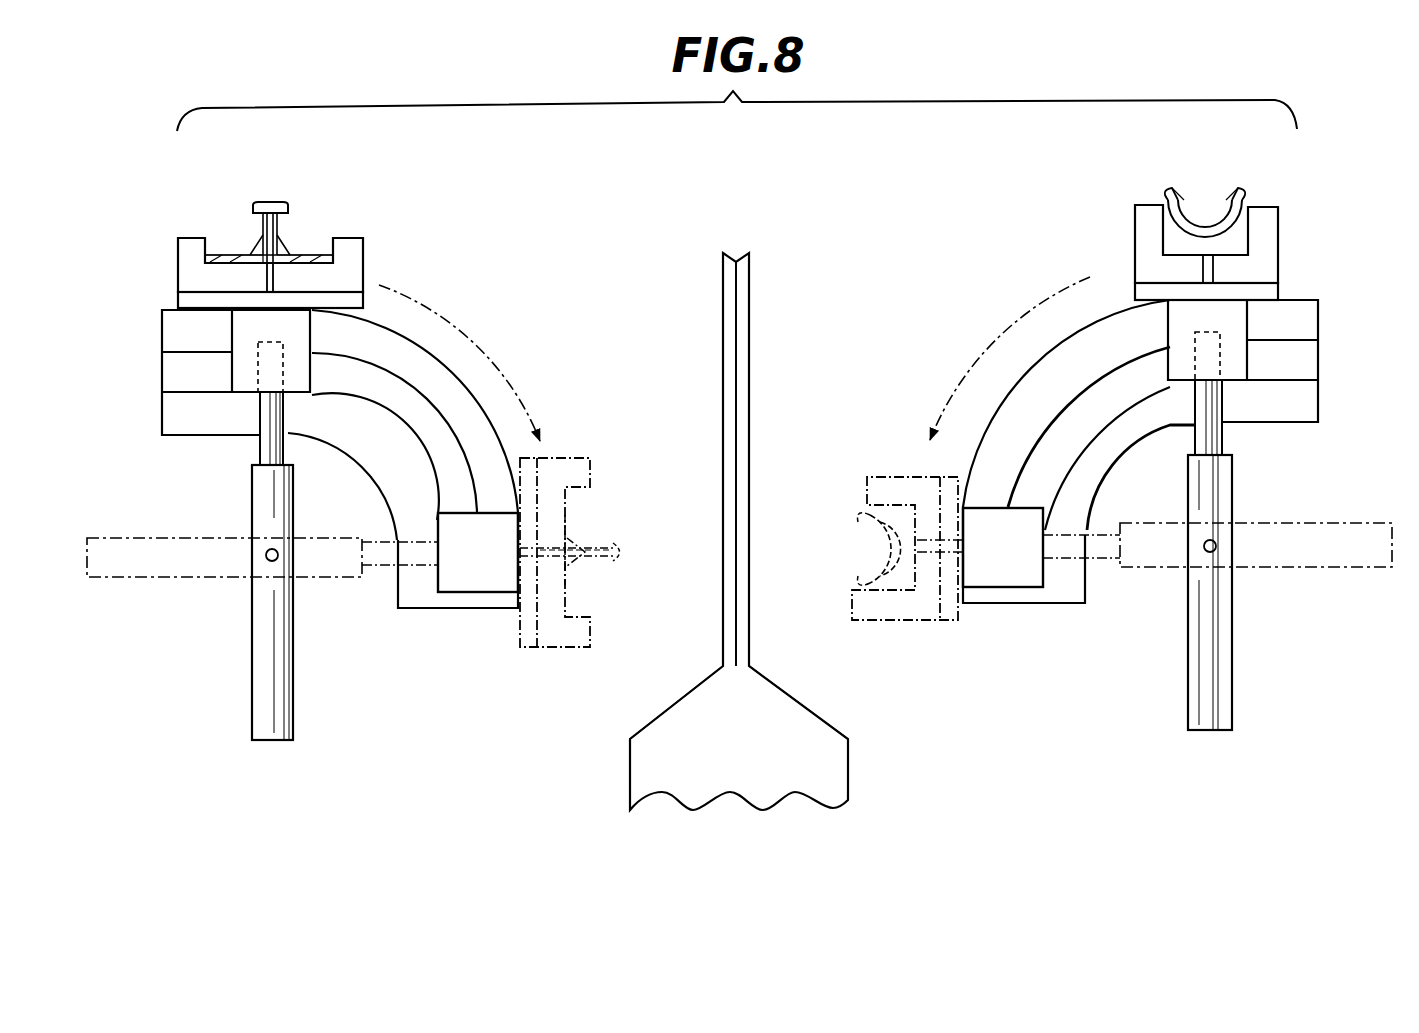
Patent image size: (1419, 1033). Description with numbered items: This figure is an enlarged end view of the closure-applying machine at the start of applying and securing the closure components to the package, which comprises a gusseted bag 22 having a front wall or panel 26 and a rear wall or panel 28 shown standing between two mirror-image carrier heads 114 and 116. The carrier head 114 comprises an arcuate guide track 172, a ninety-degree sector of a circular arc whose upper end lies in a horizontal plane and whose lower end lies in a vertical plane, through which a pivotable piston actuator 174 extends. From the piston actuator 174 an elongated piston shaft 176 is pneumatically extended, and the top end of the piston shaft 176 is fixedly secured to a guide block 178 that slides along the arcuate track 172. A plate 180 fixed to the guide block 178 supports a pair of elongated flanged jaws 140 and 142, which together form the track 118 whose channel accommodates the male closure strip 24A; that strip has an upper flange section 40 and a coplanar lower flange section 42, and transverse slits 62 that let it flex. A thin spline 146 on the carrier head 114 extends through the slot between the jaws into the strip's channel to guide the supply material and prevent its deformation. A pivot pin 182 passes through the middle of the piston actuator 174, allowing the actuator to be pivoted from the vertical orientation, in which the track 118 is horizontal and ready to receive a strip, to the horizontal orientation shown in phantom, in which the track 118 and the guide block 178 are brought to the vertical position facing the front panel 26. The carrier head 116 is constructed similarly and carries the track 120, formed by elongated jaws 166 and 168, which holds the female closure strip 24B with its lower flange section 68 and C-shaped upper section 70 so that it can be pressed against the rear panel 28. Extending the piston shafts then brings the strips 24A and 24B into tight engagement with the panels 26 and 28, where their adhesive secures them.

The gusseted bag 22 is at (653, 759).
The male closure strip 24A is at (288, 198).
The female closure strip 24B is at (1183, 185).
The front wall or panel 26 is at (722, 632).
The rear wall or panel 28 is at (751, 632).
The upper flange section 40 is at (232, 258).
The lower flange section 42 is at (312, 258).
The transverse slits 62 is at (270, 201).
The lower flange section 68 is at (1153, 196).
The C-shaped upper section 70 is at (1200, 240).
The carrier head 114 is at (442, 363).
The carrier head 116 is at (1038, 361).
The track 118 is at (179, 232).
The track 120 is at (1132, 228).
The flanged jaw 140 is at (188, 258).
The flanged jaw 142 is at (352, 247).
The spline 146 is at (273, 272).
The jaw 166 is at (1148, 220).
The jaw 168 is at (1263, 220).
The arcuate guide track 172 is at (405, 438).
The piston actuator 174 is at (333, 570).
The piston shaft 176 is at (265, 445).
The guide block 178 is at (265, 318).
The plate 180 is at (190, 302).
The pivot pin 182 is at (266, 562).